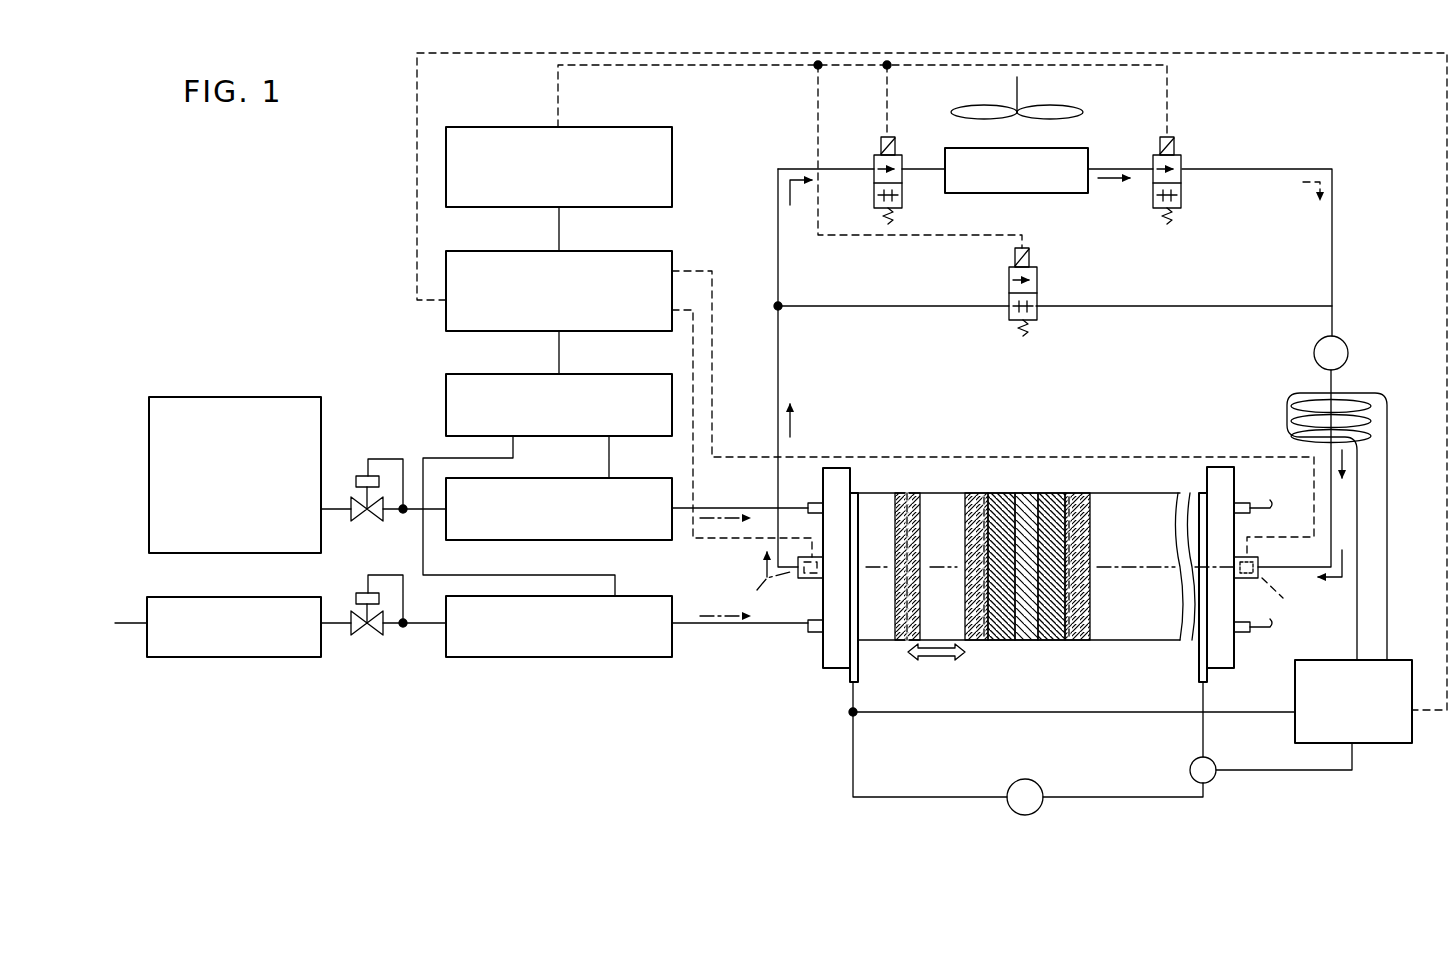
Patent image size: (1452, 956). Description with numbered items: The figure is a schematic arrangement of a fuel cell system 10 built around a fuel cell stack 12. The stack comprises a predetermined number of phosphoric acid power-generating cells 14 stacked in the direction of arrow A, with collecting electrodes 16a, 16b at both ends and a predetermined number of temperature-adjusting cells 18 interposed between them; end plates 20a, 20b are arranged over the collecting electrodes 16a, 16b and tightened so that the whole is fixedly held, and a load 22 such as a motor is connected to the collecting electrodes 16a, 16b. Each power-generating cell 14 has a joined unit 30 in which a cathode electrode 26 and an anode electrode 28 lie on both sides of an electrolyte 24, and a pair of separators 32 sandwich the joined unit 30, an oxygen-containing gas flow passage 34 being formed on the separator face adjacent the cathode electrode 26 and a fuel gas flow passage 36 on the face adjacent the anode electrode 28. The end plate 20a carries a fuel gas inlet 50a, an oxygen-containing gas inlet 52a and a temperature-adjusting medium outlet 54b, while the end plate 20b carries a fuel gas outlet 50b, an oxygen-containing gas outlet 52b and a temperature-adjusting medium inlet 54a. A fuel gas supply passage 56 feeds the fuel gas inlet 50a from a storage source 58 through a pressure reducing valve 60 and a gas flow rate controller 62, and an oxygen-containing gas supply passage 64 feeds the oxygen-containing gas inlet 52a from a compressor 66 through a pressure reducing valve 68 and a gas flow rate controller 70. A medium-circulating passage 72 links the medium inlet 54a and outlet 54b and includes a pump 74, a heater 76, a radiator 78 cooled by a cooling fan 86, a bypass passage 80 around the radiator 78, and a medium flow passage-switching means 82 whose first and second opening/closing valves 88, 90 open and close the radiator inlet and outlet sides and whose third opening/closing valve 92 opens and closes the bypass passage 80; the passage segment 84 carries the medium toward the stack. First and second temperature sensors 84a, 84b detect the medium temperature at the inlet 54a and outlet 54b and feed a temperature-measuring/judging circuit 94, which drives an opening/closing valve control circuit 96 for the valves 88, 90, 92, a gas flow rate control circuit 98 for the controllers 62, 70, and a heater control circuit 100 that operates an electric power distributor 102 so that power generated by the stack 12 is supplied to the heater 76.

The fuel cell system 10 is at (857, 381).
The fuel cell stack 12 is at (1120, 471).
The power-generating cell 14 is at (1032, 509).
The collecting electrode 16a is at (858, 670).
The collecting electrode 16b is at (1199, 676).
The temperature-adjusting cell 18 is at (915, 488).
The end plate 20a is at (850, 478).
The end plate 20b is at (1217, 670).
The load 22 is at (1030, 779).
The electrolyte 24 is at (1028, 490).
The cathode electrode 26 is at (1000, 490).
The anode electrode 28 is at (1053, 525).
The joined unit 30 is at (1030, 645).
The separator 32 is at (978, 490).
The oxygen-containing gas flow passage 34 is at (987, 642).
The fuel gas flow passage 36 is at (1097, 534).
The fuel gas inlet 50a is at (808, 502).
The fuel gas outlet 50b is at (1252, 502).
The oxygen-containing gas inlet 52a is at (812, 633).
The oxygen-containing gas outlet 52b is at (1252, 633).
The temperature-adjusting medium inlet 54a is at (1247, 579).
The temperature-adjusting medium outlet 54b is at (810, 579).
The fuel gas supply passage 56 is at (739, 508).
The storage source 58 is at (295, 392).
The pressure reducing valve 60 is at (367, 523).
The gas flow rate controller 62 is at (568, 472).
The oxygen-containing gas supply passage 64 is at (719, 630).
The compressor 66 is at (295, 657).
The pressure reducing valve 68 is at (367, 637).
The gas flow rate controller 70 is at (646, 592).
The medium-circulating passage 72 is at (1354, 254).
The pump 74 is at (1349, 355).
The heater 76 is at (1285, 404).
The radiator 78 is at (968, 194).
The bypass passage 80 is at (913, 305).
The medium flow passage-switching means 82 is at (1234, 150).
The coolant passage 84 is at (779, 372).
The first temperature sensor 84a is at (1286, 600).
The second temperature sensor 84b is at (757, 584).
The cooling fan 86 is at (1061, 106).
The first opening/closing valve 88 is at (896, 146).
The second opening/closing valve 90 is at (1175, 146).
The third opening/closing valve 92 is at (1030, 258).
The temperature-measuring/judging circuit 94 is at (643, 252).
The opening/closing valve control circuit 96 is at (643, 127).
The gas flow rate control circuit 98 is at (643, 374).
The heater control circuit 100 is at (1385, 744).
The electric power distributor 102 is at (1189, 772).